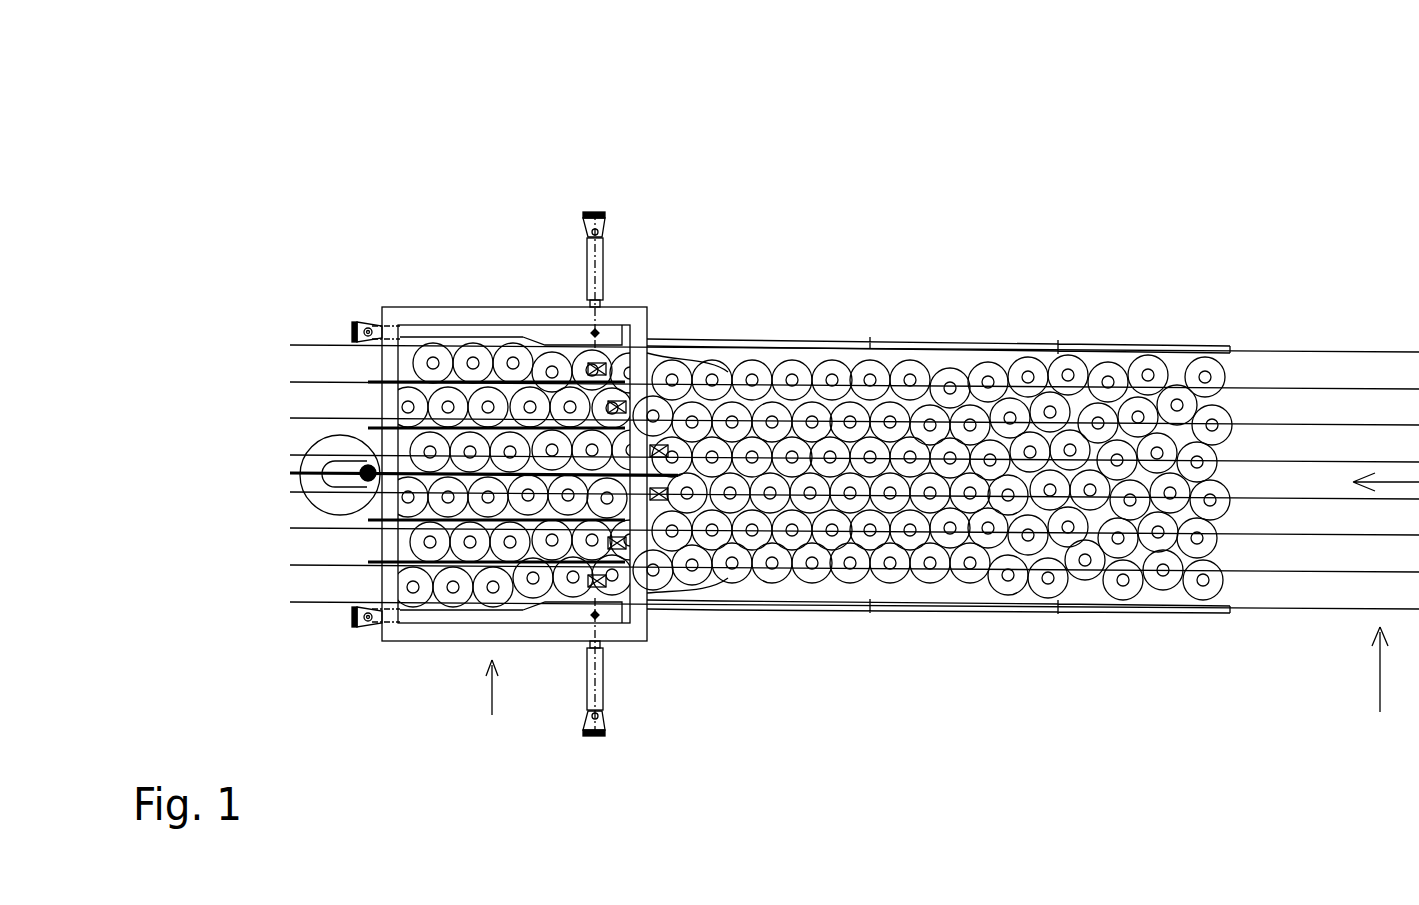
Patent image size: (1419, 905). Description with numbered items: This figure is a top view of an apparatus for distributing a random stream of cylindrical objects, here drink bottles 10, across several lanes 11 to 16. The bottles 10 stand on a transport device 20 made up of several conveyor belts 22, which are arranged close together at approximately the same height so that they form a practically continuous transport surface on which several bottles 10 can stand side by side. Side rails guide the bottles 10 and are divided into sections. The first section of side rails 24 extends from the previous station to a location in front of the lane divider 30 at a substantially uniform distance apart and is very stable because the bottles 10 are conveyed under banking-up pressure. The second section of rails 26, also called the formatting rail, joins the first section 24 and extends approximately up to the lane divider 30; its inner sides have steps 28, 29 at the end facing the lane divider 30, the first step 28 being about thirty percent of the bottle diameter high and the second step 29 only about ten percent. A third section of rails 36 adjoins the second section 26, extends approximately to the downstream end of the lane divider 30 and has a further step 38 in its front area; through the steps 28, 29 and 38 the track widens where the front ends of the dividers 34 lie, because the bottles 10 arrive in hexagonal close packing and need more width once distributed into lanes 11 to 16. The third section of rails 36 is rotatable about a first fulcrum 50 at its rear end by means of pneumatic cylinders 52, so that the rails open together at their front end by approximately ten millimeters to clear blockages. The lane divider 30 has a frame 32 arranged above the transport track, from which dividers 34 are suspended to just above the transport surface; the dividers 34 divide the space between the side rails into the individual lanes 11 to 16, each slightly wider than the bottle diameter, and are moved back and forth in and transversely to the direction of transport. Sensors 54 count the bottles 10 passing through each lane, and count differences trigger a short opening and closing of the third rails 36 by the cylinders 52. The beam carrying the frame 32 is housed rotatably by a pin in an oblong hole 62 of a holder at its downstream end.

The drink bottles 10 is at (1008, 587).
The lane 11 is at (835, 580).
The lane 12 is at (835, 536).
The lane 13 is at (465, 488).
The lane 14 is at (835, 443).
The lane 15 is at (835, 403).
The lane 16 is at (835, 363).
The transport device 20 is at (1386, 612).
The conveyor belts 22 is at (1302, 587).
The first section of side rails 24 is at (1155, 742).
The second section of rails 26 is at (890, 738).
The first step 28 is at (720, 592).
The second step 29 is at (675, 597).
The lane divider 30 is at (492, 716).
The frame 32 is at (478, 315).
The dividers 34 is at (378, 492).
The third section of rails 36 is at (433, 617).
The step 38 is at (532, 620).
The first fulcrum 50 is at (365, 622).
The pneumatic cylinders 52 is at (603, 690).
The sensors 54 is at (655, 490).
The oblong hole 62 is at (305, 498).